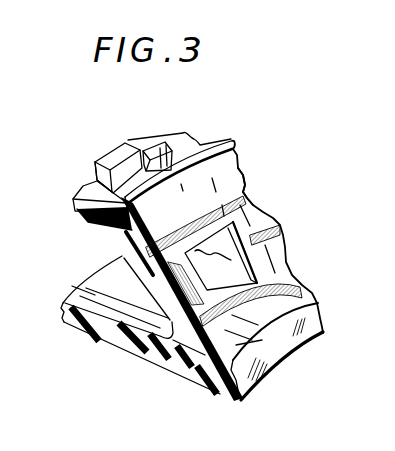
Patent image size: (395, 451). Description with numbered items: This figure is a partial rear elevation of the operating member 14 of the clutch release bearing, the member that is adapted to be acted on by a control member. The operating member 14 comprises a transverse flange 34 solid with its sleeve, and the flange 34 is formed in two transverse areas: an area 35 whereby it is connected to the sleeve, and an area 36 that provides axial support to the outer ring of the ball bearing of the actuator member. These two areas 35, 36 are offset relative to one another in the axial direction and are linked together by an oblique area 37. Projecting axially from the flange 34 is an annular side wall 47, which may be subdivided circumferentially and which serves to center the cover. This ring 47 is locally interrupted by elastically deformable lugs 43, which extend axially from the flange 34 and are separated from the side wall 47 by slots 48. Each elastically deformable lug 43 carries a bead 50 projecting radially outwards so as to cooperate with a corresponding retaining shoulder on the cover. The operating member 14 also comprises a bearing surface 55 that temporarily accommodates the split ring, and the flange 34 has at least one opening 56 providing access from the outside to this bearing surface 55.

The operating member 14 is at (289, 233).
The transverse flange 34 is at (116, 245).
The area 35 is at (278, 263).
The area 36 is at (196, 211).
The oblique area 37 is at (250, 213).
The elastically deformable lug 43 is at (88, 176).
The annular side wall 47 is at (81, 225).
The slot 48 is at (157, 163).
The bead 50 is at (116, 157).
The bearing surface 55 is at (239, 264).
The opening 56 is at (245, 346).